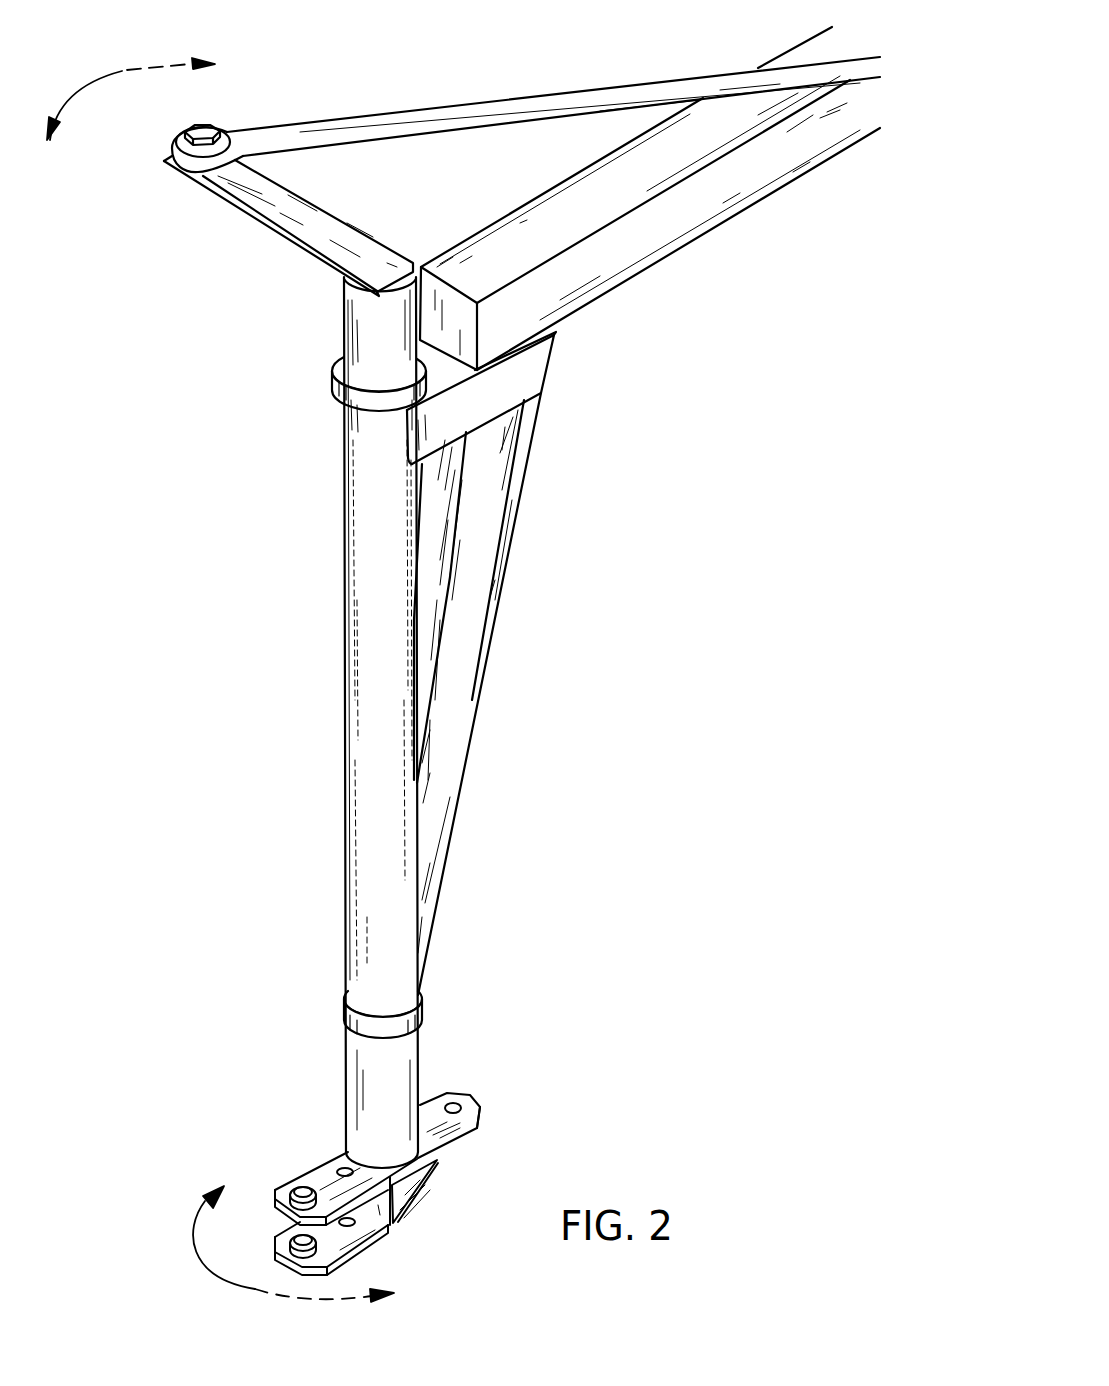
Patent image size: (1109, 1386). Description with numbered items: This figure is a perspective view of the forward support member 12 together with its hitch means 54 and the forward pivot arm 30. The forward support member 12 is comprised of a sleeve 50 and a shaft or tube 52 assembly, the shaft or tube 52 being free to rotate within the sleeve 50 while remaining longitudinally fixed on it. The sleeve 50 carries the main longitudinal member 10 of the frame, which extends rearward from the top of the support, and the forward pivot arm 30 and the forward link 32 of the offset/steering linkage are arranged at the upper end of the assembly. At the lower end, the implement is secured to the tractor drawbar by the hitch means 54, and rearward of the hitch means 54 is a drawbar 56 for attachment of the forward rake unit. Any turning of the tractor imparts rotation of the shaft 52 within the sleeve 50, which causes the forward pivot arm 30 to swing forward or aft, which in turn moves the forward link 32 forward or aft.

The main longitudinal member 10 is at (627, 245).
The forward support member 12 is at (507, 702).
The forward pivot arm 30 is at (278, 220).
The forward link 32 is at (402, 115).
The sleeve 50 is at (368, 748).
The shaft or tube 52 is at (343, 328).
The hitch means 54 is at (303, 1173).
The drawbar 56 is at (477, 1103).